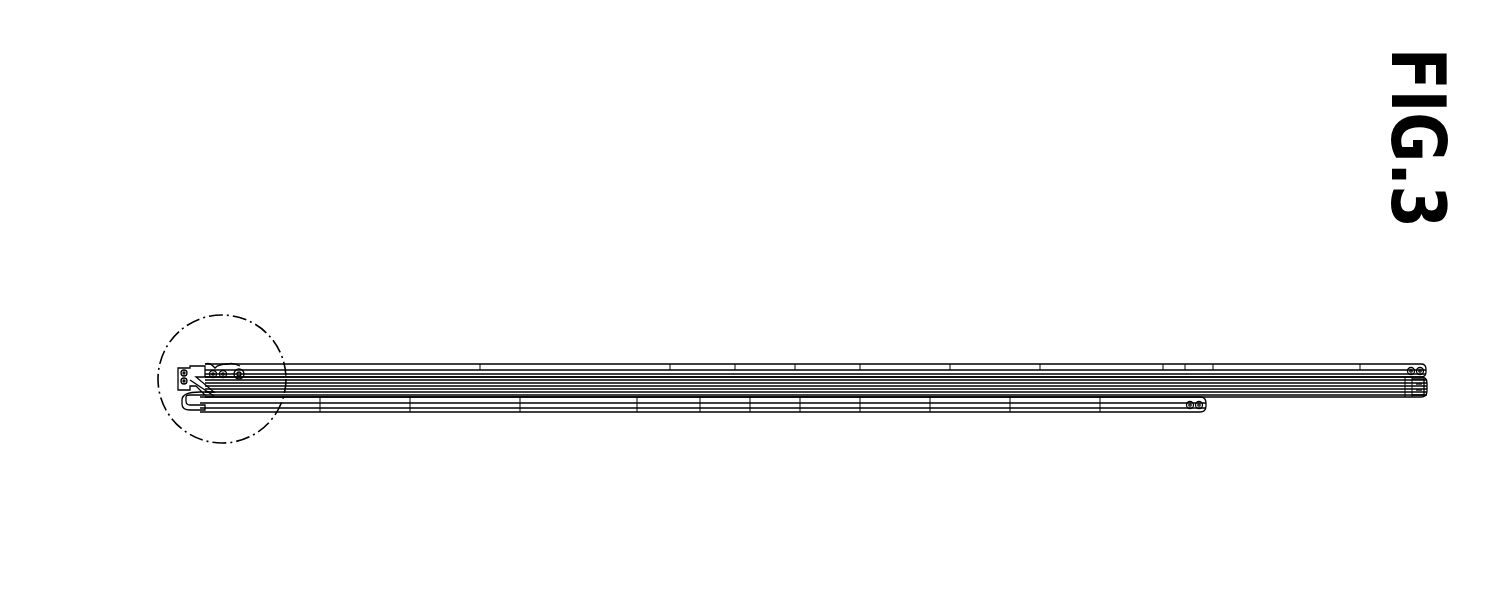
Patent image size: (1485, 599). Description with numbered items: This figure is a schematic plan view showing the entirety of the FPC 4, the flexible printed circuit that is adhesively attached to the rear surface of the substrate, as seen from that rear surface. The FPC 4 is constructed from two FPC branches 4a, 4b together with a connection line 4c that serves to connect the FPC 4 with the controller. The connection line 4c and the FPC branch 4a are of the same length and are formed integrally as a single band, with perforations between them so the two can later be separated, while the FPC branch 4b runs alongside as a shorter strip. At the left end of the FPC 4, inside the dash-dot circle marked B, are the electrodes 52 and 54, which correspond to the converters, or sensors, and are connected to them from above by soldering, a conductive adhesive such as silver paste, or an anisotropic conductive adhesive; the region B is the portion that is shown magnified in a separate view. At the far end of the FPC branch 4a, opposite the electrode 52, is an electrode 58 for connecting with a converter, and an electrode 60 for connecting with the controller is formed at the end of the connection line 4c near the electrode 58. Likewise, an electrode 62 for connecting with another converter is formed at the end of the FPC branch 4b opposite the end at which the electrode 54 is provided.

The FPC 4 is at (755, 322).
The FPC branch 4a is at (820, 372).
The FPC branch 4b is at (658, 406).
The connection line 4c is at (1318, 397).
The electrode 52 is at (213, 366).
The electrode 54 is at (176, 368).
The electrode 58 is at (1427, 372).
The electrode 60 is at (1425, 392).
The electrode 62 is at (1205, 409).
The portion of the FPC B is at (264, 320).